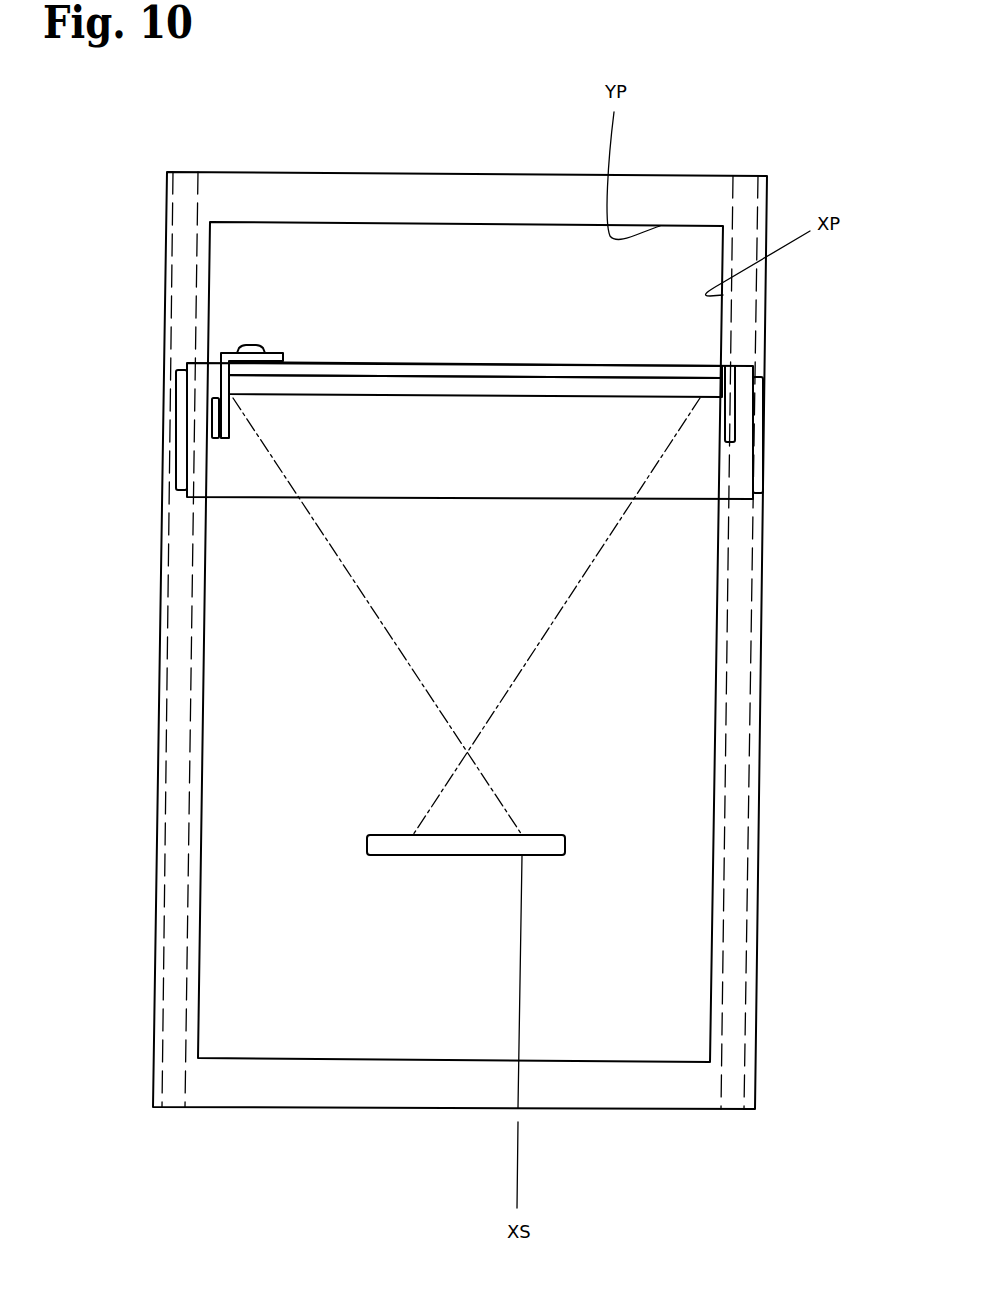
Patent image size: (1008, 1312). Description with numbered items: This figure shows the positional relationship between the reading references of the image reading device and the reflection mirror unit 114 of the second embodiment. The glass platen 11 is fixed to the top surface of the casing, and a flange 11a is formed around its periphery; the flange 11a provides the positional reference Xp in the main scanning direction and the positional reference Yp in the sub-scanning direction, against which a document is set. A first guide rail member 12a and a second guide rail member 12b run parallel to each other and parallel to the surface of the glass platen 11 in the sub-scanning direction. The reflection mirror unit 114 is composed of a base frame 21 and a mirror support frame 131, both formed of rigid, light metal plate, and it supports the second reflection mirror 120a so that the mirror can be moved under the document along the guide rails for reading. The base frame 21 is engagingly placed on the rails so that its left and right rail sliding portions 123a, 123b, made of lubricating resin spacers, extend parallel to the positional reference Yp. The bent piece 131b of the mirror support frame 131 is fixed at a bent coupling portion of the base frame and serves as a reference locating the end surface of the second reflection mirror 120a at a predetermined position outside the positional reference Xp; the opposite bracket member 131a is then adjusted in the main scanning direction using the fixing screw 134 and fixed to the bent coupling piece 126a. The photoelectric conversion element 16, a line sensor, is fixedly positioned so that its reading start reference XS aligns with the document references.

The glass platen 11 is at (628, 700).
The flange 11a is at (268, 223).
The first guide rail member 12a is at (150, 1087).
The second guide rail member 12b is at (745, 1060).
The photoelectric conversion element 16 is at (428, 850).
The base frame 21 is at (248, 492).
The reflection mirror unit 114 is at (531, 348).
The second reflection mirror 120a is at (322, 390).
The rail sliding portion 123a is at (180, 467).
The rail sliding portion 123b is at (758, 433).
The bent coupling piece 126a is at (213, 418).
The mirror support frame 131 is at (662, 372).
The bracket member 131a is at (228, 378).
The bent piece 131b is at (728, 395).
The fixing screw 134 is at (250, 343).